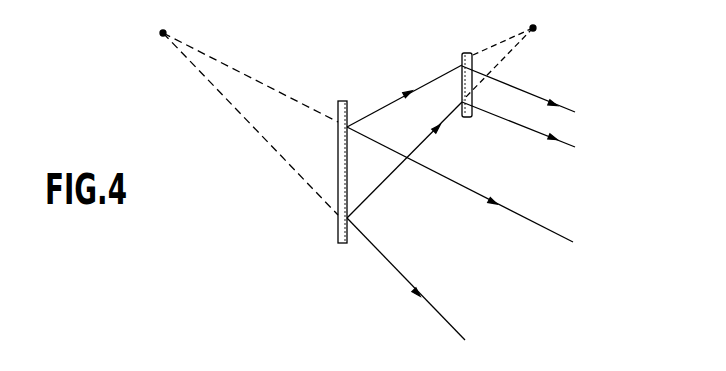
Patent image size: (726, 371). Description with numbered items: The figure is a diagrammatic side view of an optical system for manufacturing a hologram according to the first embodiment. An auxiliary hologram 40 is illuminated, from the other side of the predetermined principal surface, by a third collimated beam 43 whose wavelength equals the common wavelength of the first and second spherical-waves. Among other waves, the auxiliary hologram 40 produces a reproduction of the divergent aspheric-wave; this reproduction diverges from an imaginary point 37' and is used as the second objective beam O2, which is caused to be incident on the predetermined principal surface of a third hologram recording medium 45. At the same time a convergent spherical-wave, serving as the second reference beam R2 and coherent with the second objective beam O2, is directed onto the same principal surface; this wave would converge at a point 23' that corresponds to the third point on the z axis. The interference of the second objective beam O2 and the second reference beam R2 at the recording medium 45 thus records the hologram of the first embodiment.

The convergence point 23' is at (228, 122).
The imaginary point 37' is at (499, 53).
The auxiliary hologram 40 is at (462, 57).
The third collimated beam 43 is at (566, 143).
The third hologram recording medium 45 is at (344, 243).
The second objective beam O2 is at (404, 96).
The second reference beam R2 is at (463, 184).